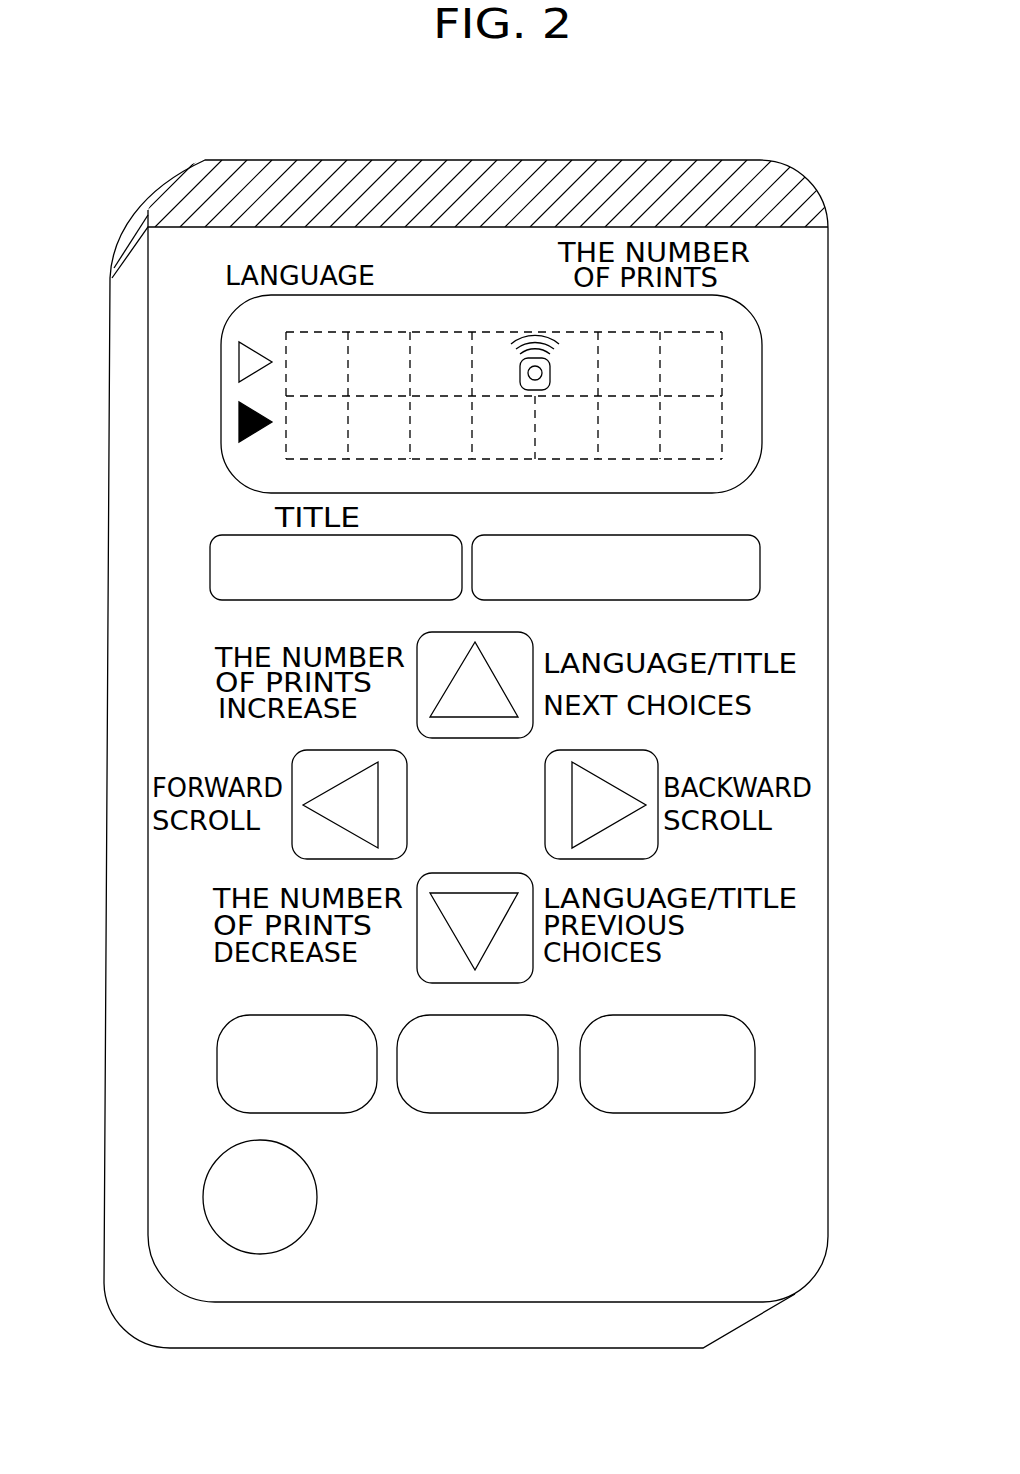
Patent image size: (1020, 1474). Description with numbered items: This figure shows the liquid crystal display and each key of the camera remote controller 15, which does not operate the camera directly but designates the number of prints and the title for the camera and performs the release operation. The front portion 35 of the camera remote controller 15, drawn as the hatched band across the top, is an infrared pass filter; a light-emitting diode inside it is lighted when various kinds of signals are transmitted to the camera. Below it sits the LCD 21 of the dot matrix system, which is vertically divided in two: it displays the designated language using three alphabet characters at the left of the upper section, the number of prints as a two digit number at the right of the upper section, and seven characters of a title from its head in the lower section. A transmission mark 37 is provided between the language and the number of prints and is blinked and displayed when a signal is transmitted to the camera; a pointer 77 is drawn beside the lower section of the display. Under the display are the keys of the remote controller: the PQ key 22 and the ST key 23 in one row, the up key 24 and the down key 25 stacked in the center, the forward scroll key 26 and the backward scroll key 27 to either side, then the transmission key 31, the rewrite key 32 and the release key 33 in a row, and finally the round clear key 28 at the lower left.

The camera remote controller 15 is at (488, 152).
The front portion 35 is at (235, 158).
The transmission mark 37 is at (520, 358).
The LCD 21 is at (753, 401).
The selection indicator mark 77 is at (240, 422).
The PQ key 22 is at (210, 568).
The ST key 23 is at (760, 563).
The up key 24 is at (417, 716).
The down key 25 is at (522, 968).
The forward scroll key 26 is at (297, 840).
The backward scroll key 27 is at (650, 757).
The transmission key 31 is at (215, 1075).
The rewrite key 32 is at (512, 1103).
The release key 33 is at (755, 1075).
The clear key 28 is at (318, 1197).